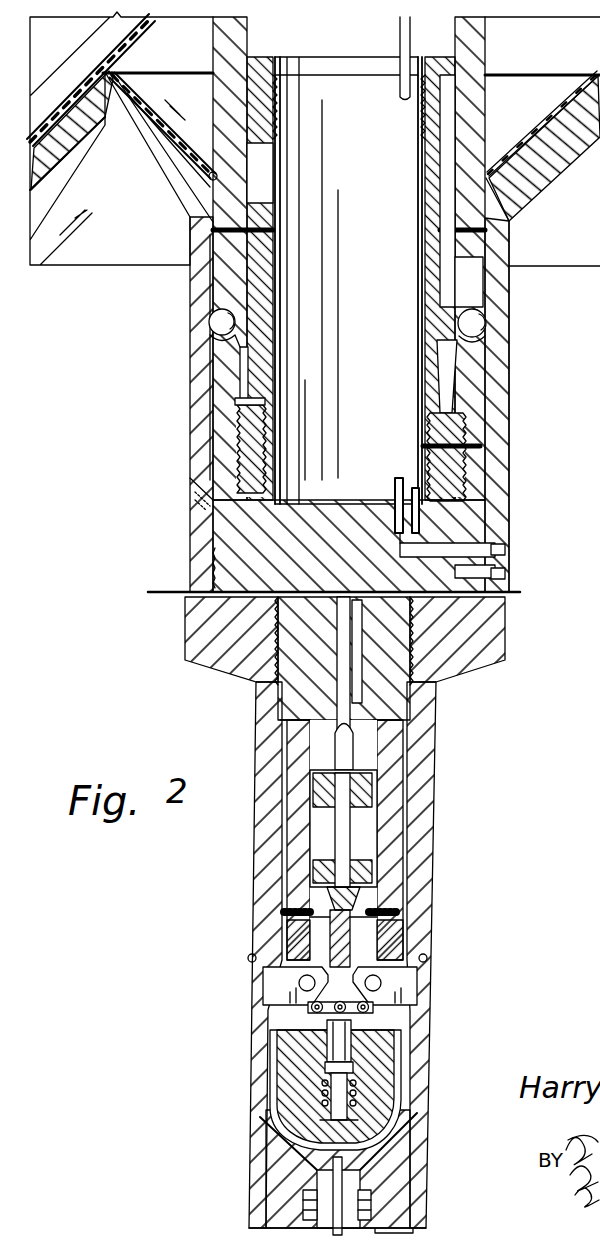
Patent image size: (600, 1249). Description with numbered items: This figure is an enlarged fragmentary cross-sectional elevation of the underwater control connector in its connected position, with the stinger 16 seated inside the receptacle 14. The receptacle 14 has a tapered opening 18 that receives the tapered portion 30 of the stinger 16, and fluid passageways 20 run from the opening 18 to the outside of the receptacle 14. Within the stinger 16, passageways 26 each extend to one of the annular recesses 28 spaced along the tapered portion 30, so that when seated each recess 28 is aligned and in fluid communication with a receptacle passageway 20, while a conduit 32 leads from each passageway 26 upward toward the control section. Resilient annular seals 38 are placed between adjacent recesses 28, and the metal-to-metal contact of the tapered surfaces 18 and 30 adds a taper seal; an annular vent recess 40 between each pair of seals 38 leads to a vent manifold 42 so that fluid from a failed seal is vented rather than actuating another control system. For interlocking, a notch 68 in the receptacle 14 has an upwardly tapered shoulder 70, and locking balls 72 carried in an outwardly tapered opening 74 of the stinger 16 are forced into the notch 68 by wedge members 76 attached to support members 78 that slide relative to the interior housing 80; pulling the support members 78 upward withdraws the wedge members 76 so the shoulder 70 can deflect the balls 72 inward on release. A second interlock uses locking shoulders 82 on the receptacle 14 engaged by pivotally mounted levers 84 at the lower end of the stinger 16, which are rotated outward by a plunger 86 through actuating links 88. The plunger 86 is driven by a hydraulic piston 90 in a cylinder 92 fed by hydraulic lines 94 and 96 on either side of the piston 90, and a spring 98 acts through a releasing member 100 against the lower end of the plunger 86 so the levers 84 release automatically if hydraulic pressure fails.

The receptacle 14 is at (520, 140).
The stinger 16 is at (430, 769).
The opening 18 is at (210, 510).
The fluid passageways 20 is at (507, 551).
The passageways 26 is at (400, 537).
The annular recesses 28 is at (214, 545).
The tapered portion 30 is at (205, 525).
The conduit 32 is at (400, 490).
The resilient annular seal 38 is at (242, 677).
The annular vent recess 40 is at (432, 623).
The vent manifold 42 is at (397, 576).
The notch 68 is at (208, 322).
The tapered shoulder 70 is at (215, 307).
The locking balls 72 is at (215, 332).
The opening 74 is at (478, 348).
The wedge members 76 is at (440, 350).
The support members 78 is at (356, 58).
The interior housing 80 is at (430, 160).
The locking shoulders 82 is at (255, 958).
The levers 84 is at (400, 981).
The plunger 86 is at (362, 928).
The actuating links 88 is at (352, 1018).
The hydraulic piston 90 is at (362, 862).
The cylinder 92 is at (362, 820).
The hydraulic line 94 is at (362, 698).
The hydraulic line 96 is at (334, 742).
The spring 98 is at (318, 1100).
The releasing member 100 is at (332, 1033).